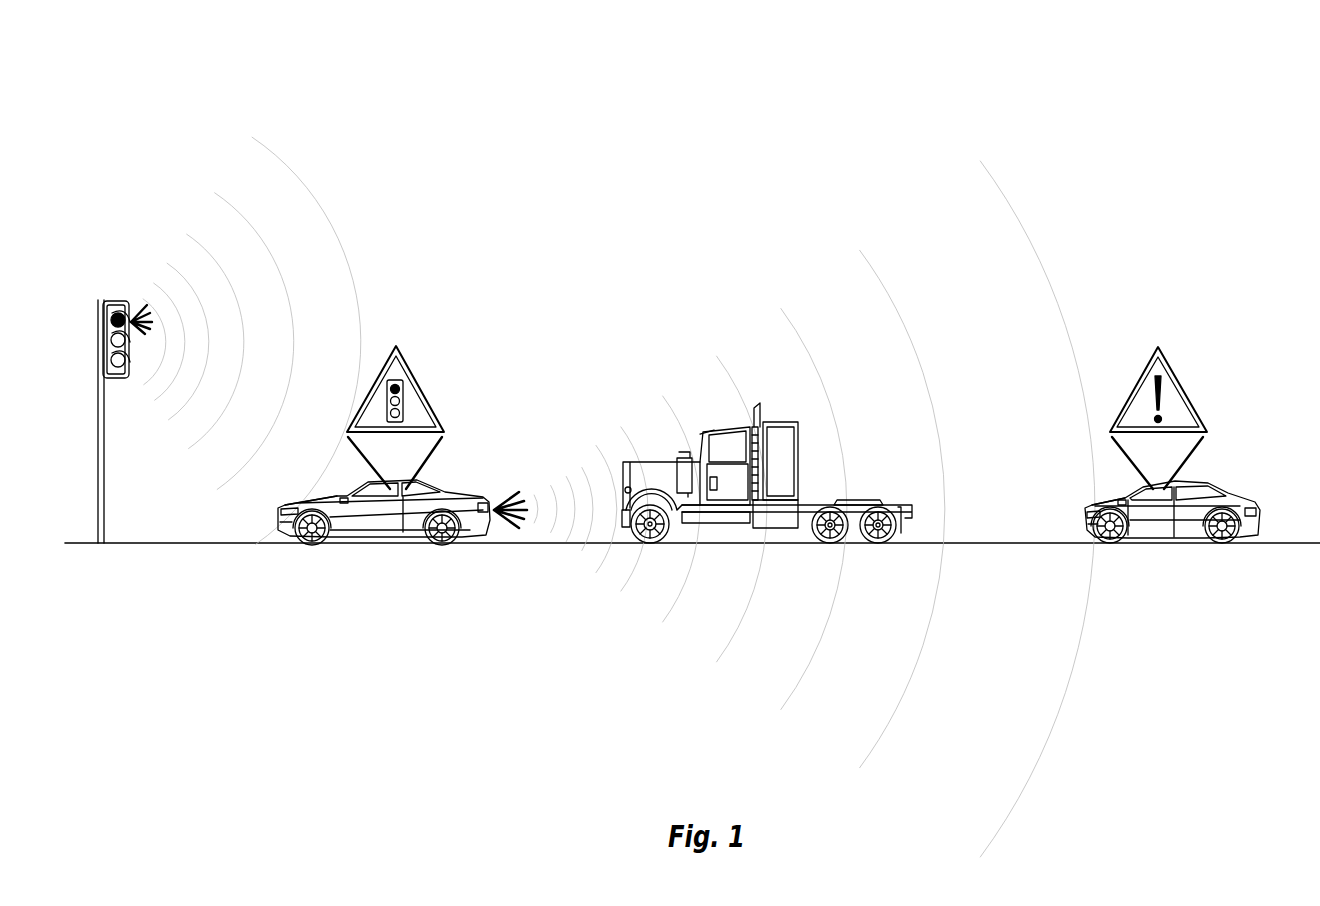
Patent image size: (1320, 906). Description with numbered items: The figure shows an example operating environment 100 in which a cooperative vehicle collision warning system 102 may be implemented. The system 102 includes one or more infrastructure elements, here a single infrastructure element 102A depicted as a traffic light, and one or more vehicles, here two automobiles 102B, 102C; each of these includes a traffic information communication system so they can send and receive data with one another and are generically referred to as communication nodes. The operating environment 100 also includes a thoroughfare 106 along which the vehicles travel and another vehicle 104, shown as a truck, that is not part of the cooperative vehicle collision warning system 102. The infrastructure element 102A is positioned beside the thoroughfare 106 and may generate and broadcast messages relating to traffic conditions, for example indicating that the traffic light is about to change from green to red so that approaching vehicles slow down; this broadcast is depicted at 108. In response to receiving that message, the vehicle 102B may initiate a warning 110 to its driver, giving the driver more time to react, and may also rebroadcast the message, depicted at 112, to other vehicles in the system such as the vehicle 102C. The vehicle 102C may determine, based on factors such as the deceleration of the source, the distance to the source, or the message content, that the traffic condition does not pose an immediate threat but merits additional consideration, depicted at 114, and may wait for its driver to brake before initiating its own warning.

The operating environment 100 is at (316, 98).
The cooperative vehicle collision warning system 102 is at (606, 188).
The infrastructure element 102A is at (108, 300).
The vehicle 102B is at (448, 487).
The vehicle 102C is at (1212, 486).
The other vehicle 104 is at (657, 460).
The thoroughfare 106 is at (178, 542).
The broadcast of the message 108 is at (366, 252).
The warning 110 is at (403, 362).
The rebroadcast of the message 112 is at (1062, 262).
The additional consideration 114 is at (1172, 362).